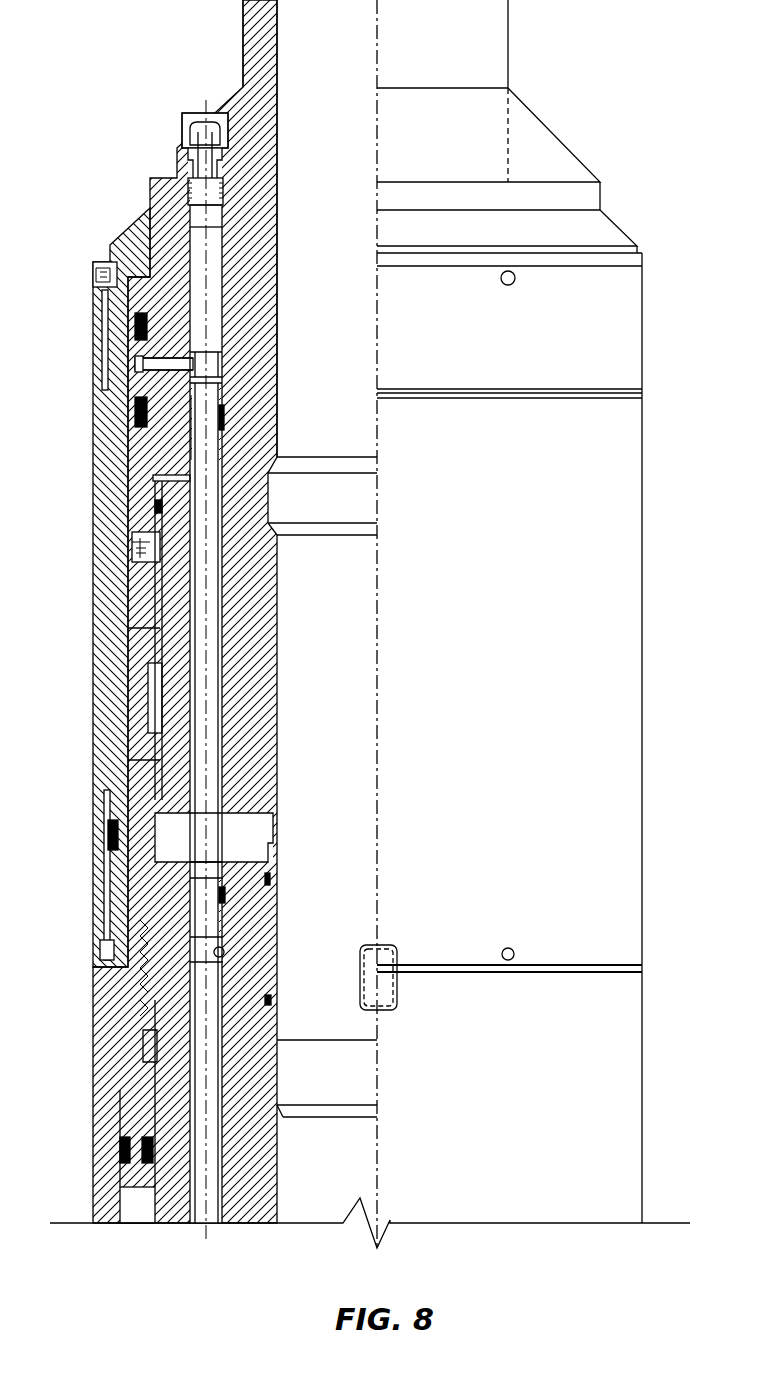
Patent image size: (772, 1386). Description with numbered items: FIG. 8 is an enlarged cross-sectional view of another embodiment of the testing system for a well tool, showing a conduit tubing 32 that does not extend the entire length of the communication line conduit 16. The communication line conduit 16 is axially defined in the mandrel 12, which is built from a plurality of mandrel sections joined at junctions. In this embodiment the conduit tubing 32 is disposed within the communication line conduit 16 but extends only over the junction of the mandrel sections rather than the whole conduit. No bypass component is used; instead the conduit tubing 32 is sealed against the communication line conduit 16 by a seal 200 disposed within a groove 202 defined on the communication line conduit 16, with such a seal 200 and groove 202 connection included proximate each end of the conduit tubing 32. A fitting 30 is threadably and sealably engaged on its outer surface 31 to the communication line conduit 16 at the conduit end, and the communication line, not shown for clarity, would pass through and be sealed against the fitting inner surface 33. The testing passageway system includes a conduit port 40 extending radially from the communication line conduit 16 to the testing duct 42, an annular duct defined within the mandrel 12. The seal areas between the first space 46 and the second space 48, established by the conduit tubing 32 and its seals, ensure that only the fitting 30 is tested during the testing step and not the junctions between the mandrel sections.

The mandrel 12 is at (163, 205).
The communication line conduit 16 is at (224, 953).
The fitting 30 is at (280, 157).
The fitting outer surface 31 is at (223, 205).
The conduit tubing 32 is at (188, 497).
The fitting inner surface 33 is at (208, 185).
The conduit port 40 is at (167, 366).
The testing duct 42 is at (140, 358).
The first space 46 is at (193, 455).
The second space 48 is at (248, 833).
The seal 200 is at (225, 417).
The groove 202 is at (225, 428).